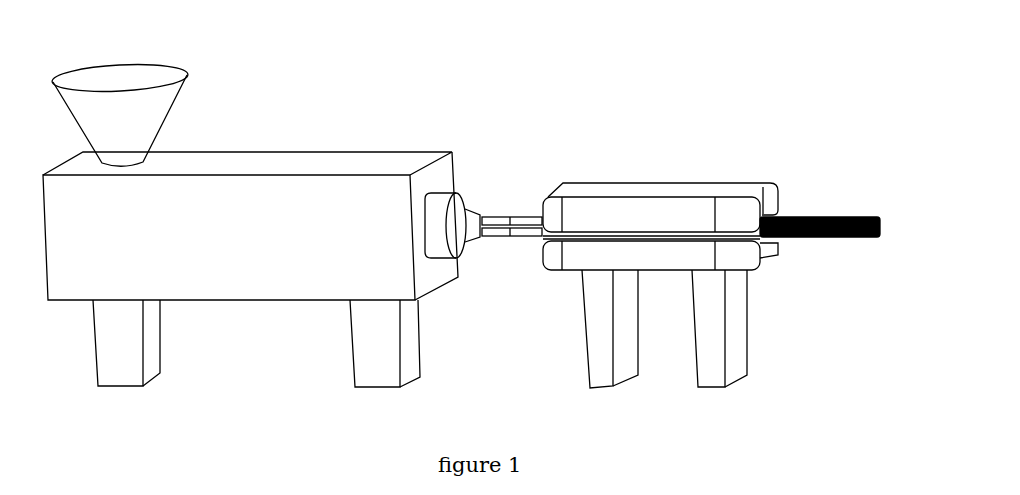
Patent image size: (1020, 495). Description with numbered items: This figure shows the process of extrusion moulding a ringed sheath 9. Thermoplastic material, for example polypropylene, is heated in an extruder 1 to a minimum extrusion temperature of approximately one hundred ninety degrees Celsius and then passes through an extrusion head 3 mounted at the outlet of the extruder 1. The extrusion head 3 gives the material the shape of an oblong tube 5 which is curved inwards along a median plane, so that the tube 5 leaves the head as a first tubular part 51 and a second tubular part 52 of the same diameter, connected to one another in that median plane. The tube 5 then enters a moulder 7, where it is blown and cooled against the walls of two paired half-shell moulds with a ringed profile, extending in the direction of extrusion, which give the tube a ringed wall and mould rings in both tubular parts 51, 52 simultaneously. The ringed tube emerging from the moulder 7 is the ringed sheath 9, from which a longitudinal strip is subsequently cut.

The extruder 1 is at (288, 147).
The extrusion head 3 is at (470, 271).
The oblong tube 5 is at (548, 196).
The first tubular part 51 is at (516, 206).
The second tubular part 52 is at (517, 242).
The moulder 7 is at (648, 269).
The ringed sheath 9 is at (820, 244).